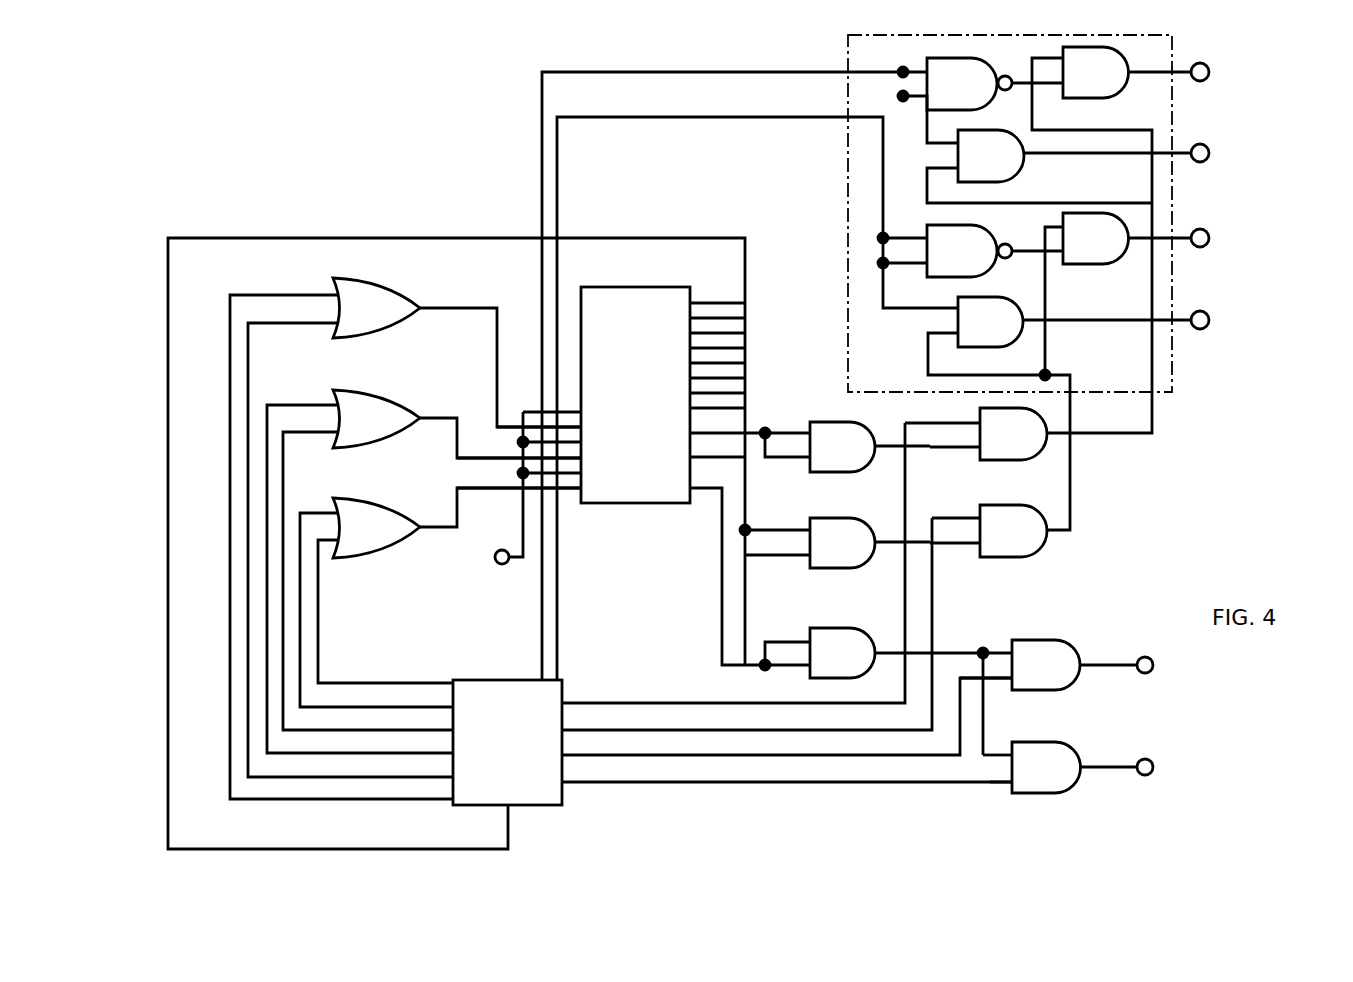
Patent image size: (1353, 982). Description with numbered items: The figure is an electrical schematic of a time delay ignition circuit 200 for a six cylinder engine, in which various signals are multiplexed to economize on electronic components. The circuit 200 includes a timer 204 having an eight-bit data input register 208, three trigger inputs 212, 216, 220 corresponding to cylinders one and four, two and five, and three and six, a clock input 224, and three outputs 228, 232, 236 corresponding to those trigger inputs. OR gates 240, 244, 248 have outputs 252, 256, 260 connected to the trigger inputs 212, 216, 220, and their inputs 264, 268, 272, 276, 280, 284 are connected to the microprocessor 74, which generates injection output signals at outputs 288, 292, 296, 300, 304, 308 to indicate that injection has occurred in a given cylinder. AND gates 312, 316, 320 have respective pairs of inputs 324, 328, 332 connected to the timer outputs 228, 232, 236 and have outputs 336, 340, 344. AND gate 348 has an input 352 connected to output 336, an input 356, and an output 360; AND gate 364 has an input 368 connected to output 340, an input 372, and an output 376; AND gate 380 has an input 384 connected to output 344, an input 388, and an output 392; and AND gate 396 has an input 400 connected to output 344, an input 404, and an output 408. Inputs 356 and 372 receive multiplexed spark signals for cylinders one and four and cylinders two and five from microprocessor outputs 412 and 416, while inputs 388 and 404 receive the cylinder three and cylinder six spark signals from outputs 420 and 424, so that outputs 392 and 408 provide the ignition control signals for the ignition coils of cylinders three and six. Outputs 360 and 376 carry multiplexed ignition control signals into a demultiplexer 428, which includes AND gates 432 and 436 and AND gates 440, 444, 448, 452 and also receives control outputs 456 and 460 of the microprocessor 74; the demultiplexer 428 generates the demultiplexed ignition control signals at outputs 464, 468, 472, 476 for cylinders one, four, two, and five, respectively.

The time delay ignition circuit 200 is at (373, 190).
The microprocessor 74 is at (541, 805).
The timer 204 is at (640, 295).
The 8-bit data input register 208 is at (690, 303).
The trigger input 212 is at (585, 414).
The trigger input 216 is at (585, 446).
The trigger input 220 is at (585, 485).
The clock input 224 is at (500, 566).
The timer output 228 is at (715, 433).
The timer output 232 is at (697, 458).
The timer output 236 is at (690, 505).
The OR gate 240 is at (422, 268).
The OR gate 244 is at (380, 397).
The OR gate 248 is at (380, 504).
The OR gate output 252 is at (430, 305).
The OR gate output 256 is at (430, 415).
The OR gate output 260 is at (420, 530).
The OR gate input 264 is at (332, 293).
The OR gate input 268 is at (333, 328).
The OR gate input 272 is at (332, 404).
The OR gate input 276 is at (333, 440).
The OR gate input 280 is at (332, 511).
The OR gate input 284 is at (333, 548).
The microprocessor output 288 is at (453, 683).
The microprocessor output 292 is at (453, 707).
The microprocessor output 296 is at (453, 730).
The microprocessor output 300 is at (453, 753).
The microprocessor output 304 is at (453, 777).
The microprocessor output 308 is at (453, 799).
The AND gate 312 is at (842, 447).
The AND gate 316 is at (842, 543).
The AND gate 320 is at (842, 653).
The pair of inputs 324 is at (805, 462).
The pair of inputs 328 is at (805, 558).
The pair of inputs 332 is at (806, 650).
The AND gate output 336 is at (872, 462).
The AND gate output 340 is at (872, 562).
The AND gate output 344 is at (876, 665).
The AND gate 348 is at (1013, 434).
The AND gate input 352 is at (975, 460).
The AND gate input 356 is at (978, 420).
The AND gate output 360 is at (1050, 440).
The AND gate 364 is at (1013, 531).
The AND gate input 368 is at (975, 558).
The AND gate input 372 is at (975, 512).
The AND gate output 376 is at (1050, 540).
The AND gate 380 is at (1046, 665).
The AND gate input 384 is at (998, 650).
The AND gate input 388 is at (1005, 690).
The AND gate output 392 is at (1082, 662).
The AND gate 396 is at (1046, 767).
The AND gate input 400 is at (1010, 760).
The AND gate input 404 is at (1008, 792).
The AND gate output 408 is at (1082, 772).
The microprocessor output 412 is at (565, 702).
The microprocessor output 416 is at (565, 729).
The microprocessor output 420 is at (565, 754).
The microprocessor output 424 is at (565, 781).
The demultiplexer (DMUX) 428 is at (1174, 386).
The AND gate 432 is at (995, 84).
The AND gate 436 is at (995, 251).
The AND gate 440 is at (1096, 72).
The AND gate 444 is at (991, 156).
The AND gate 448 is at (1096, 238).
The AND gate 452 is at (990, 322).
The control output 456 is at (538, 678).
The control output 460 is at (560, 678).
The DMUX output 464 is at (1210, 72).
The DMUX output 468 is at (1210, 155).
The DMUX output 472 is at (1210, 238).
The DMUX output 476 is at (1210, 320).